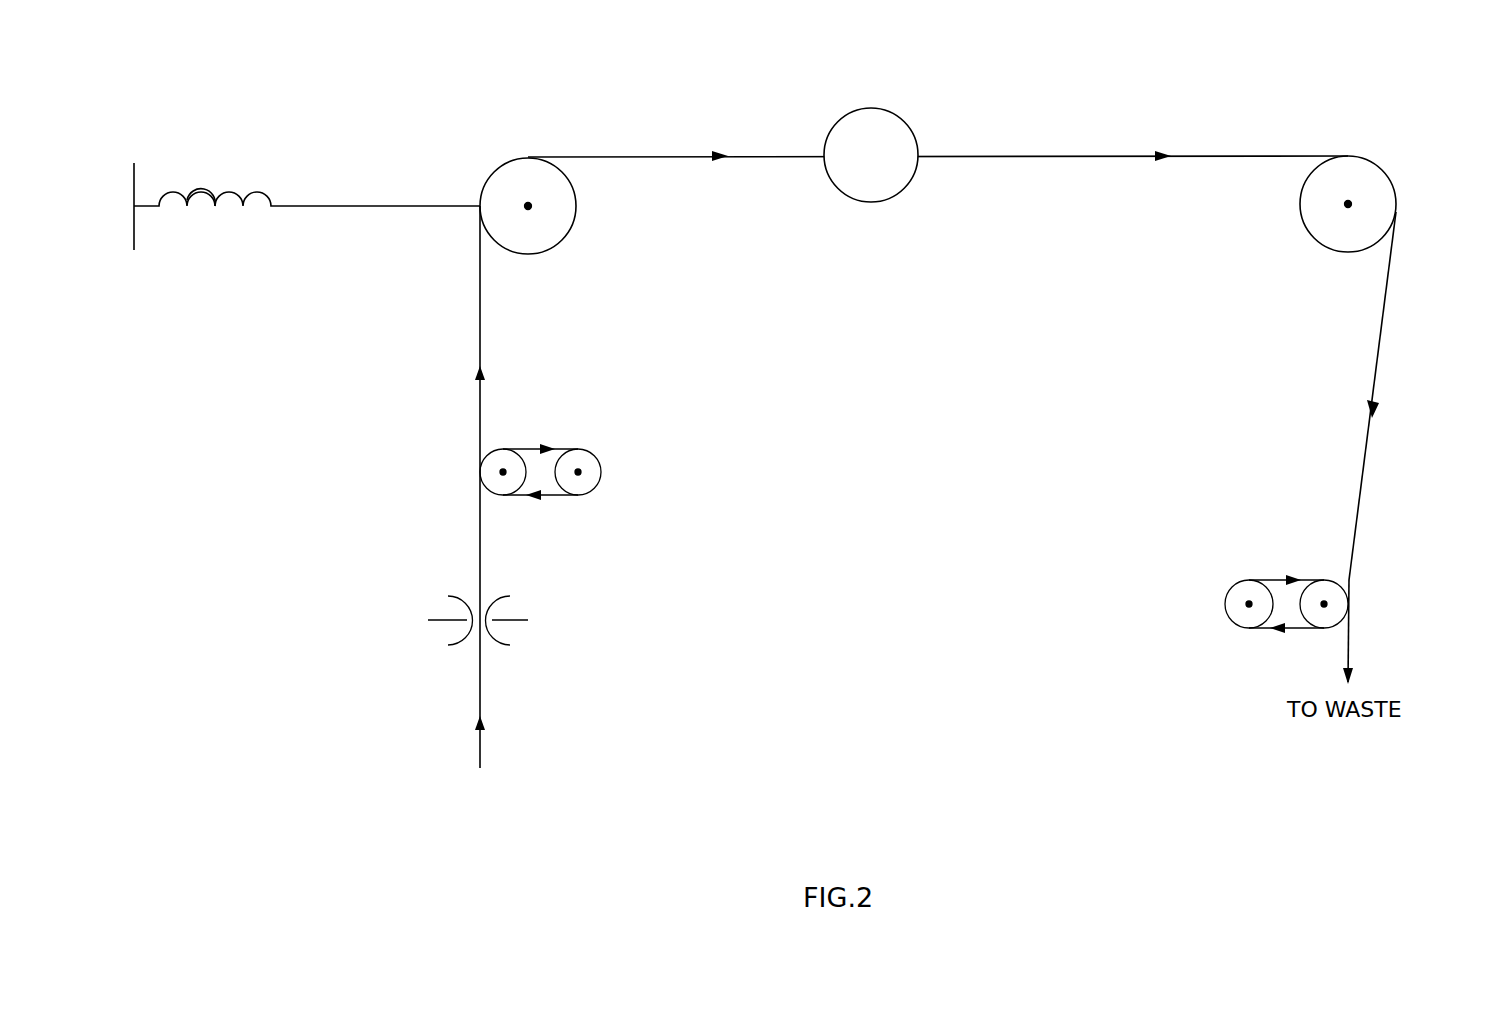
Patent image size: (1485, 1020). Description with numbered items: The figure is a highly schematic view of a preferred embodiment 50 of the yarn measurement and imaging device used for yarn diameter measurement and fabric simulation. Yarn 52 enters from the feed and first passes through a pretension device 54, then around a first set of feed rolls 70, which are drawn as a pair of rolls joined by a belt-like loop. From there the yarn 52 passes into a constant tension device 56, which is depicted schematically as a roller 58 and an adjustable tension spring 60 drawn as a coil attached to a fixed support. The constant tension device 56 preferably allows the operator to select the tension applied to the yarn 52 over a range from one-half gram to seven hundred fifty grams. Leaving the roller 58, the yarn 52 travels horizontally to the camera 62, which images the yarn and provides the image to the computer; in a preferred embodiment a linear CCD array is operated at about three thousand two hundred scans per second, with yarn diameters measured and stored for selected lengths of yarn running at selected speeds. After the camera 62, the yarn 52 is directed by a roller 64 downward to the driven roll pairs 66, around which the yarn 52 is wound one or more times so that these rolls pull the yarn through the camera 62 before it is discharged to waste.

The preferred embodiment 50 is at (1336, 42).
The yarn 52 is at (480, 700).
The pretension device 54 is at (522, 590).
The constant tension device 56 is at (248, 162).
The roller 58 is at (520, 156).
The adjustable tension spring 60 is at (210, 222).
The camera 62 is at (915, 130).
The roller 64 is at (1392, 172).
The driven roll pairs 66 is at (1262, 630).
The first set of feed rolls 70 is at (588, 449).